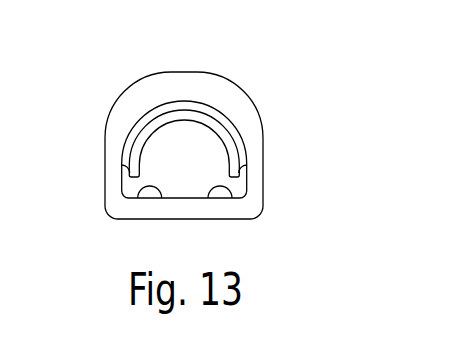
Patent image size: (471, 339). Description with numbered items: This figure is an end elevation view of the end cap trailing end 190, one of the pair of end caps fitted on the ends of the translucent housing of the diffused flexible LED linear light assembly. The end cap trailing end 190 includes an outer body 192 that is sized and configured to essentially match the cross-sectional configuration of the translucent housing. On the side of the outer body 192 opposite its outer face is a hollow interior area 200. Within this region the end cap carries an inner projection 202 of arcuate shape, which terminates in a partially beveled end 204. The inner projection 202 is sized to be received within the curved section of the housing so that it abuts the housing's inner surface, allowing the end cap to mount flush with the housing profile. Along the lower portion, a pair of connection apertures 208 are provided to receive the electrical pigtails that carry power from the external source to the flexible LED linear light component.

The end cap trailing end 190 is at (262, 86).
The outer body 192 is at (120, 123).
The hollow interior area 200 is at (153, 160).
The inner projection 202 is at (153, 114).
The partially beveled end 204 is at (243, 155).
The connection apertures 208 is at (144, 192).